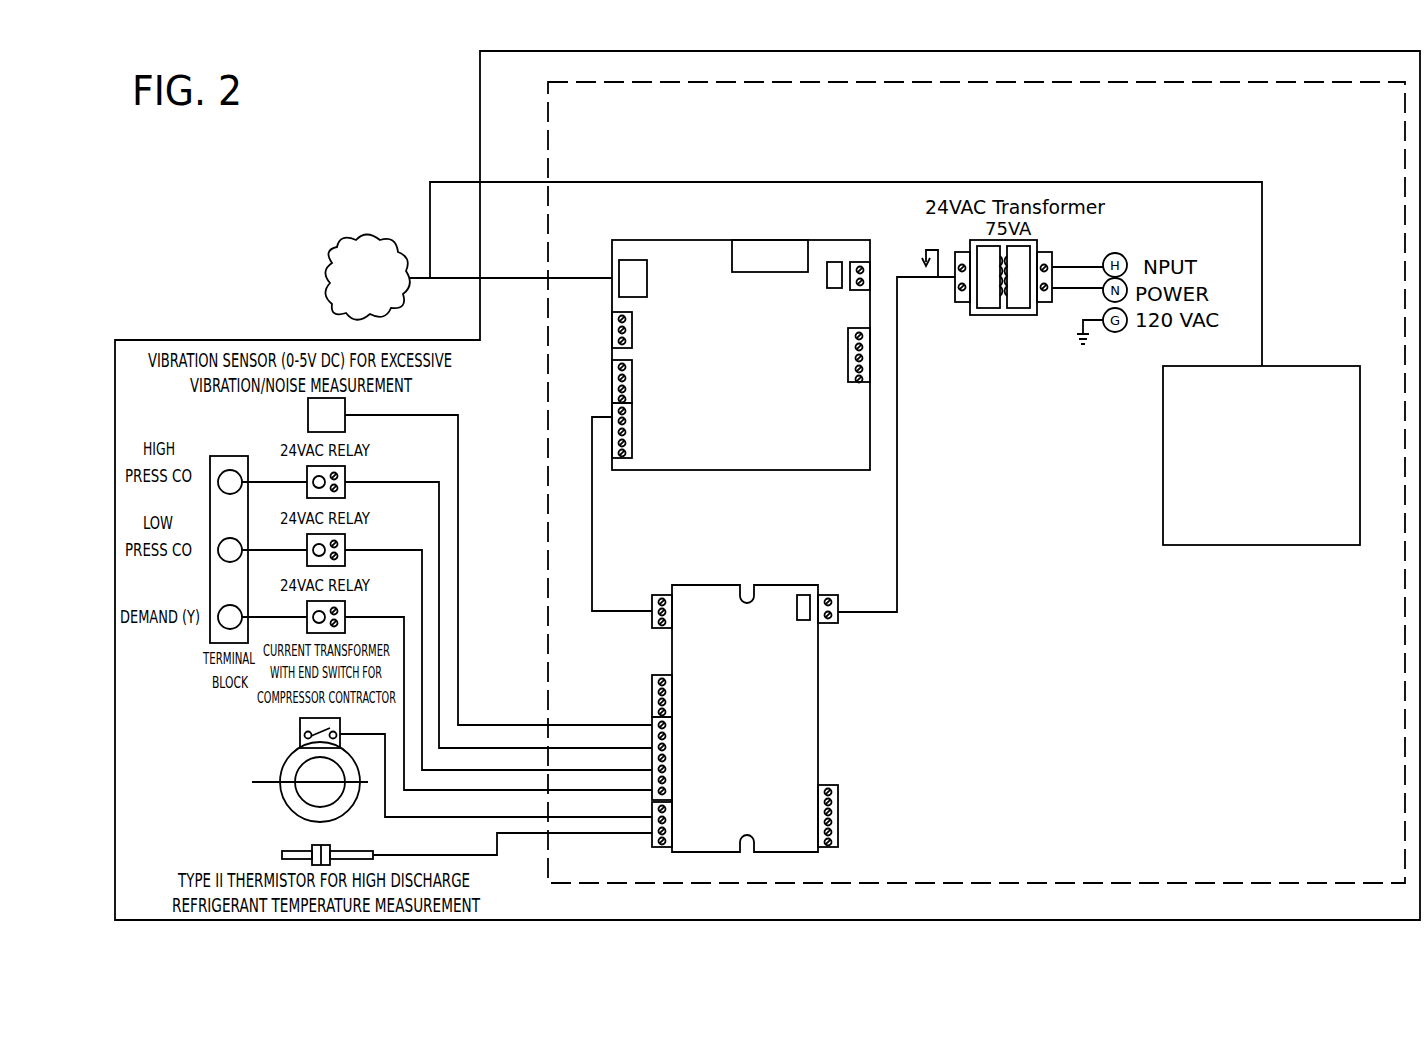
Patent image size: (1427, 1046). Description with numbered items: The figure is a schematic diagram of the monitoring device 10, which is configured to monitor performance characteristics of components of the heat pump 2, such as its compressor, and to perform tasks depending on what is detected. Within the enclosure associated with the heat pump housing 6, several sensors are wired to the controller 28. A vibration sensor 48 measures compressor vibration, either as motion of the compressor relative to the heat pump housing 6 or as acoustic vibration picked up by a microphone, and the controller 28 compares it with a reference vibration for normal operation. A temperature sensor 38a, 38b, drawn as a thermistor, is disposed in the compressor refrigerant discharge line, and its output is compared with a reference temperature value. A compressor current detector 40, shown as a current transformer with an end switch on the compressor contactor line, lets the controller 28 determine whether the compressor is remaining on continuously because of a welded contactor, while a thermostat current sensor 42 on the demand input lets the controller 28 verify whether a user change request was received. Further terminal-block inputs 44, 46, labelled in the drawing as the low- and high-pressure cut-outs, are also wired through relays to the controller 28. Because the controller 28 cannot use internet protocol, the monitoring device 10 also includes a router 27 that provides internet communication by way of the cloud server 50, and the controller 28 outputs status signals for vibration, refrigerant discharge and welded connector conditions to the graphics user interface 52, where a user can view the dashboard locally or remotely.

The heat pump 2 is at (183, 340).
The heat pump housing 6 is at (168, 921).
The monitoring device 10 is at (923, 81).
The router 27 is at (766, 366).
The controller 28 is at (754, 764).
The thermistor 38a is at (426, 843).
The thermistor 38b is at (293, 850).
The compressor current detector 40 is at (292, 762).
The thermostat current sensor 42 is at (218, 626).
The low pressure cut-out terminal 44 is at (218, 558).
The high pressure cut-out terminal 46 is at (218, 490).
The vibration sensor 48 is at (308, 415).
The cloud server 50 is at (359, 238).
The graphics user interface 52 is at (1249, 517).